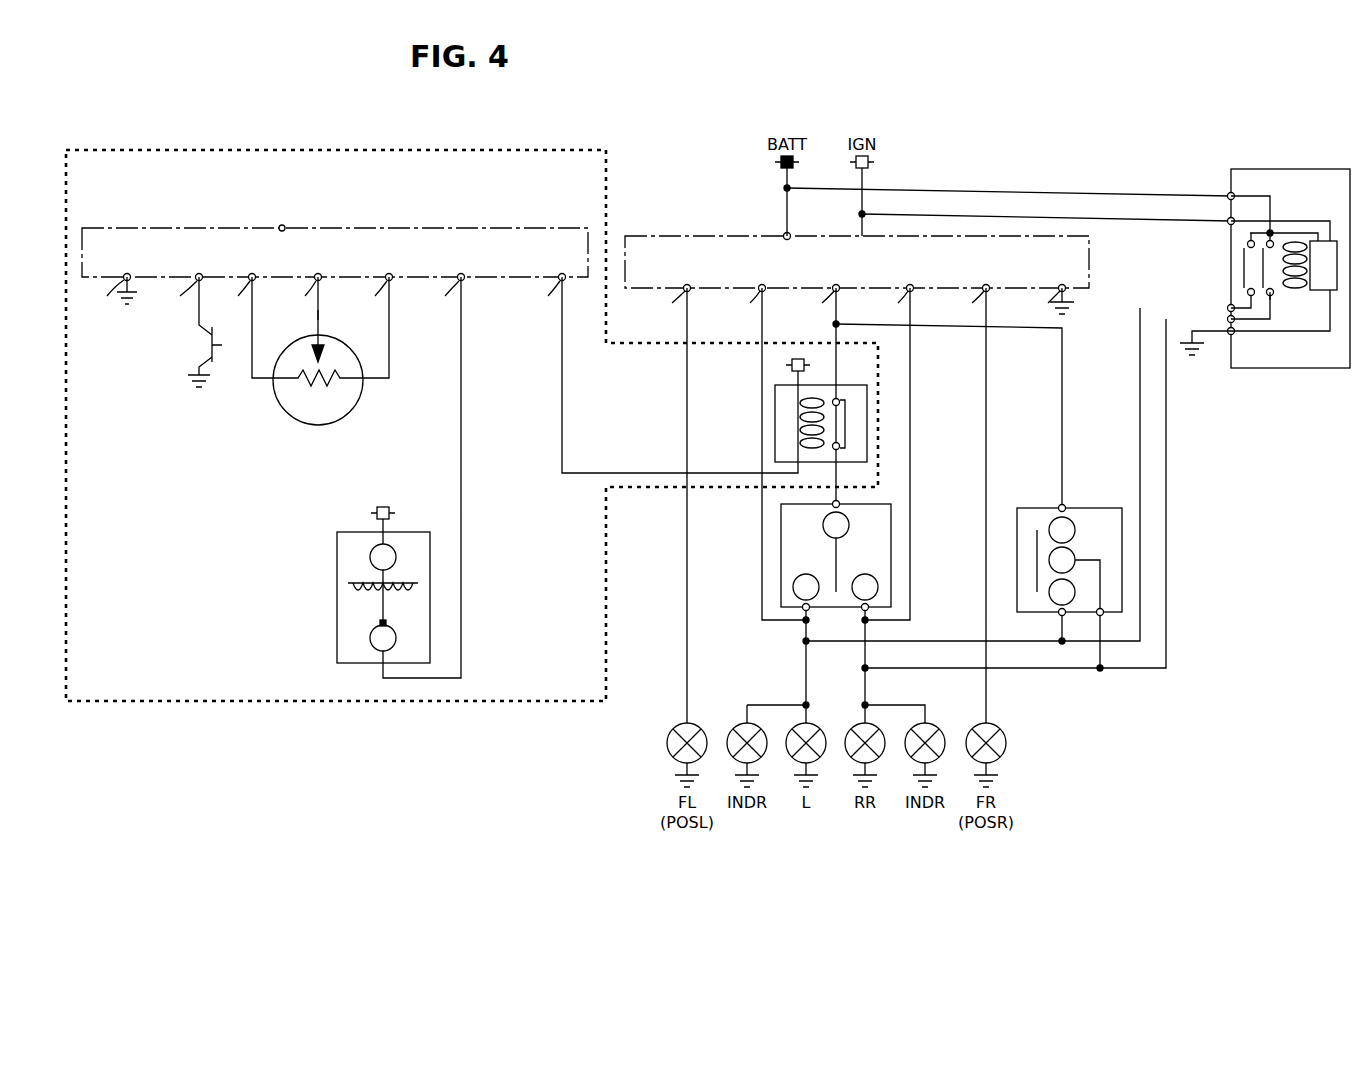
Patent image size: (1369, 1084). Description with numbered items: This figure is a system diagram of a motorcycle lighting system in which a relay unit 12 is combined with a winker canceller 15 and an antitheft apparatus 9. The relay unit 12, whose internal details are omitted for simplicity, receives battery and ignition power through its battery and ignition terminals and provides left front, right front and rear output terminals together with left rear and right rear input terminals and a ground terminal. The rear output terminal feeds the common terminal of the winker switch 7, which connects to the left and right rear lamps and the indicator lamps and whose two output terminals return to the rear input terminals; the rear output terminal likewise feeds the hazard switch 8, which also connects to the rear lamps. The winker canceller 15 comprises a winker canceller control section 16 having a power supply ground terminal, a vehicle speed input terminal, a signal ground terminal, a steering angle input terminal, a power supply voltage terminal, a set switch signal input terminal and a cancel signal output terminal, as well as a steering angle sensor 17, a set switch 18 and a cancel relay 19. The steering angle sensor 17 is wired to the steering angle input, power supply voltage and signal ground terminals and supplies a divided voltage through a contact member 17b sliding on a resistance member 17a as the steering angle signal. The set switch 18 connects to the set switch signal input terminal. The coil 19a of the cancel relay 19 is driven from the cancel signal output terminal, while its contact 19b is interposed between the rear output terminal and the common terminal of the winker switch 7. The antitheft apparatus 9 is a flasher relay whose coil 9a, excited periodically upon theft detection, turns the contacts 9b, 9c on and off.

The winker switch 7 is at (891, 555).
The hazard switch 8 is at (1085, 508).
The antitheft apparatus 9 is at (1259, 292).
The coil 9a is at (1333, 243).
The contact 9b is at (1278, 295).
The contact 9c is at (1240, 268).
The relay unit 12 is at (707, 234).
The winker canceller 15 is at (357, 704).
The winker canceller control section 16 is at (201, 226).
The steering angle sensor 17 is at (337, 380).
The resistance member 17a is at (330, 396).
The contact member 17b is at (320, 315).
The set switch 18 is at (337, 570).
The cancel relay 19 is at (831, 410).
The coil 19a is at (802, 405).
The contact 19b is at (845, 446).